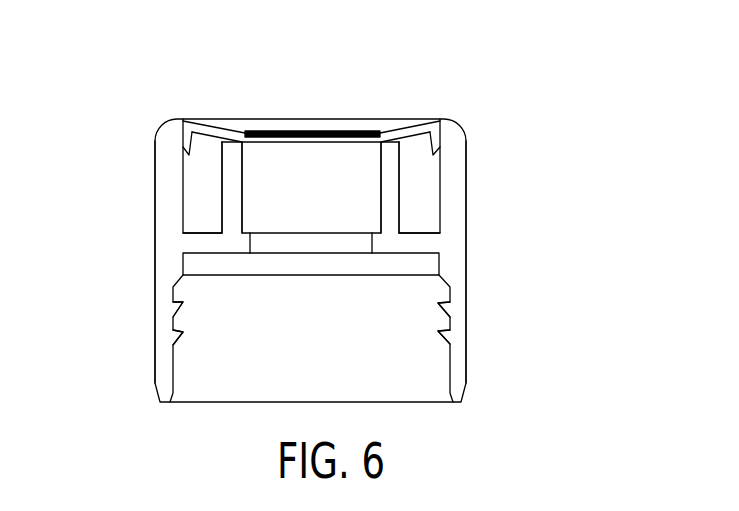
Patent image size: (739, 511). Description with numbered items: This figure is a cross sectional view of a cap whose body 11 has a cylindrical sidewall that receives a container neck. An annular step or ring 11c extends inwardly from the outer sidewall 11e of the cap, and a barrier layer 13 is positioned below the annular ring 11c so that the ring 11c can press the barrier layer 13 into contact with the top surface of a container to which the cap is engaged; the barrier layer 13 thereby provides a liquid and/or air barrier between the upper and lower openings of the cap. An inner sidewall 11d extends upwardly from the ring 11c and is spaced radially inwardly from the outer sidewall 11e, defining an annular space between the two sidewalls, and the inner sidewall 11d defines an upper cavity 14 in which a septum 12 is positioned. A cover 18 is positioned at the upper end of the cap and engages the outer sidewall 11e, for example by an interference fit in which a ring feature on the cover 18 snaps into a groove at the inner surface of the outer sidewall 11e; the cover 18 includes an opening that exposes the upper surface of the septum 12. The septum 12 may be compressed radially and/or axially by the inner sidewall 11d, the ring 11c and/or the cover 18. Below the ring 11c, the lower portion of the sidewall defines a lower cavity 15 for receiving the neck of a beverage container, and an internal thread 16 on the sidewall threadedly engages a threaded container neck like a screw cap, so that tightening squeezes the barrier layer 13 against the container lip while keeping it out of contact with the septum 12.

The body 11 is at (282, 218).
The annular ring 11c is at (205, 243).
The inner sidewall 11d is at (230, 197).
The outer sidewall 11e is at (452, 204).
The septum 12 is at (355, 195).
The barrier layer 13 is at (388, 263).
The upper cavity 14 is at (319, 156).
The lower cavity 15 is at (309, 346).
The internal thread 16 is at (175, 336).
The cover 18 is at (412, 128).